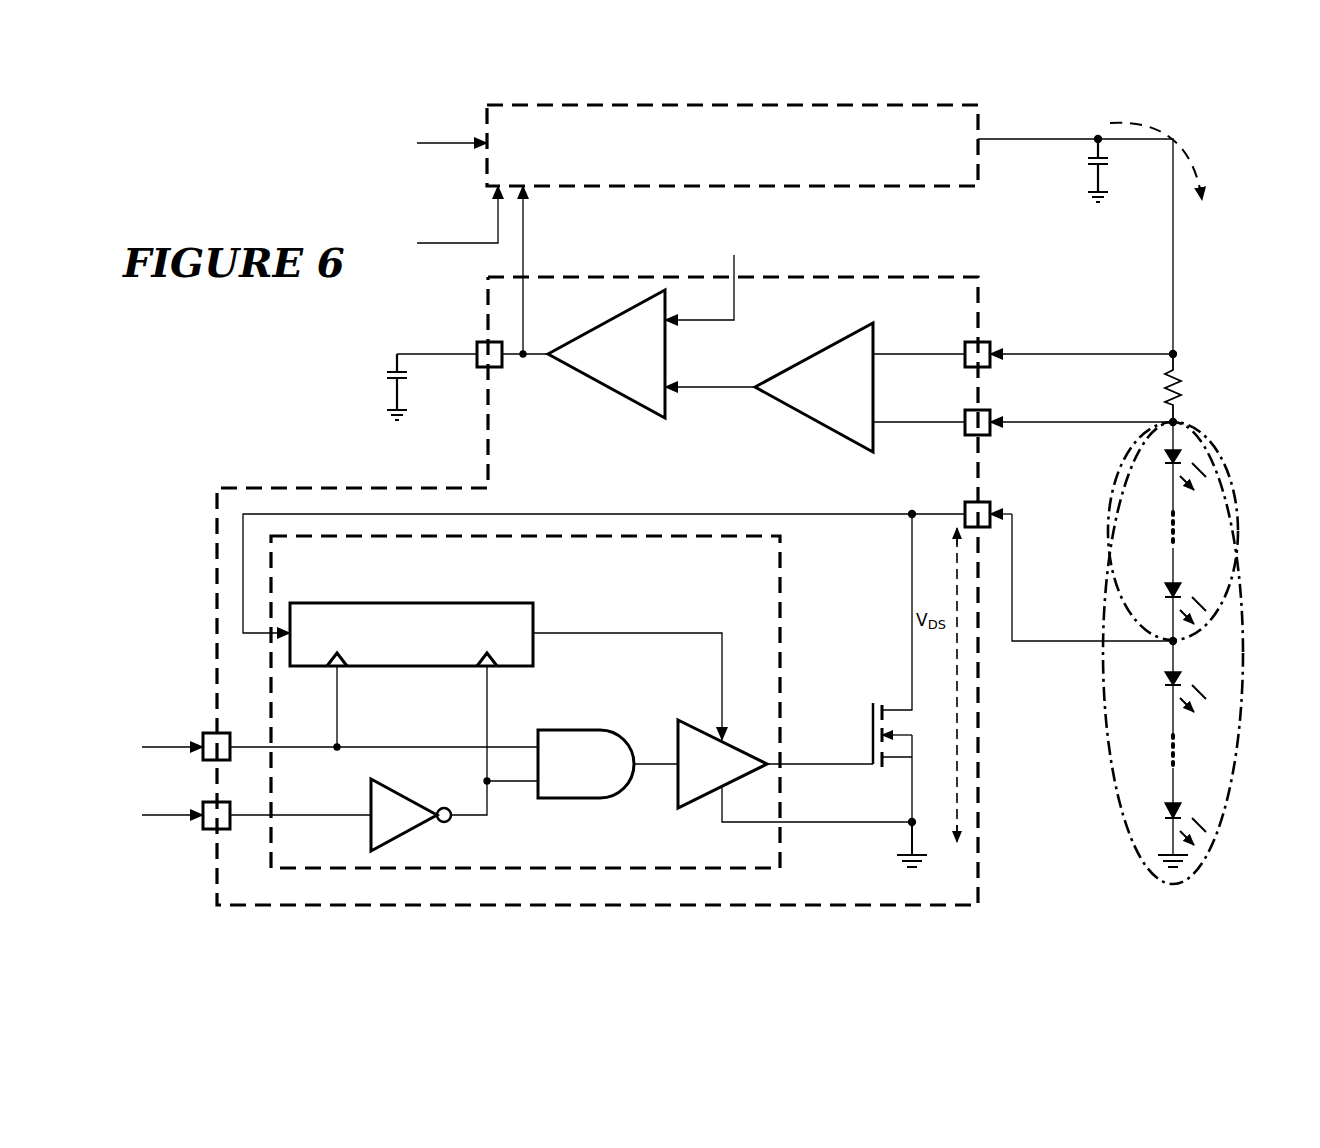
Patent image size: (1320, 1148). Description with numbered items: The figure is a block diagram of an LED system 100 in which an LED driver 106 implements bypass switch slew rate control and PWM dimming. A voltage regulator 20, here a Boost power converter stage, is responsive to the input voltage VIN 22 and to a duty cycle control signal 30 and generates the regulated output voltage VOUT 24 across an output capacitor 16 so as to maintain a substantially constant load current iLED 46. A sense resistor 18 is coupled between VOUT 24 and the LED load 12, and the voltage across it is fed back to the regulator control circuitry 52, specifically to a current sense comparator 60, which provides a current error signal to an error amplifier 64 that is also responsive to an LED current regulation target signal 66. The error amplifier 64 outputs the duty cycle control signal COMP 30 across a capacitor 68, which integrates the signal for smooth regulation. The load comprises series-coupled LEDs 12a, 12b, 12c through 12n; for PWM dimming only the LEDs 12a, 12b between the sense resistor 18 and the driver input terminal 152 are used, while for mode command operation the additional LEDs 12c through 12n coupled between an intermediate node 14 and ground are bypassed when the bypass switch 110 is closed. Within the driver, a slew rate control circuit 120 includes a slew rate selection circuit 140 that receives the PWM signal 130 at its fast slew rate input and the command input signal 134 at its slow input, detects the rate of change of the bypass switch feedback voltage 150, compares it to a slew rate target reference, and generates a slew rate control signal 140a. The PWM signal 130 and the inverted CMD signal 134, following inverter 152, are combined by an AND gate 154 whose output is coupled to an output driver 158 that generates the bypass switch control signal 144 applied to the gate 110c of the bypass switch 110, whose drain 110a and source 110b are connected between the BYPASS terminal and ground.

The LED system 100 is at (370, 150).
The voltage regulator 20 is at (732, 145).
The input voltage VIN 22 is at (440, 150).
The PWM signal 130 is at (440, 250).
The command input signal 134 is at (241, 815).
The duty cycle control signal 30 is at (525, 258).
The output voltage VOUT 24 is at (1095, 142).
The output capacitor 16 is at (1106, 168).
The load current iLED 46 is at (1230, 150).
The regulator control circuitry 52 is at (597, 591).
The LED driver 106 is at (217, 540).
The capacitor 68 is at (408, 374).
The error amplifier 64 is at (593, 383).
The LED current regulation target signal 66 is at (736, 292).
The current sense comparator 60 is at (812, 360).
The sense resistor 18 is at (1165, 383).
The inverter 152 is at (965, 505).
The bypass switch feedback voltage 150 is at (815, 514).
The intermediate node 14 is at (1163, 636).
The LEDs 12 is at (1250, 600).
The LED 12a is at (1165, 461).
The LED 12b is at (1165, 595).
The LED 12c is at (1165, 683).
The LED 12n is at (1165, 815).
The slew rate control circuit 120 is at (525, 702).
The slew rate selection circuit 140 is at (413, 692).
The fast slew rate input 140a is at (720, 690).
The AND gate 154 is at (608, 764).
The output driver 158 is at (722, 764).
The bypass switch control signal 144 is at (822, 762).
The bypass switch 110 is at (907, 722).
The bypass switch drain terminal 110a is at (910, 705).
The bypass switch source terminal 110b is at (912, 785).
The bypass switch gate terminal 110c is at (870, 737).